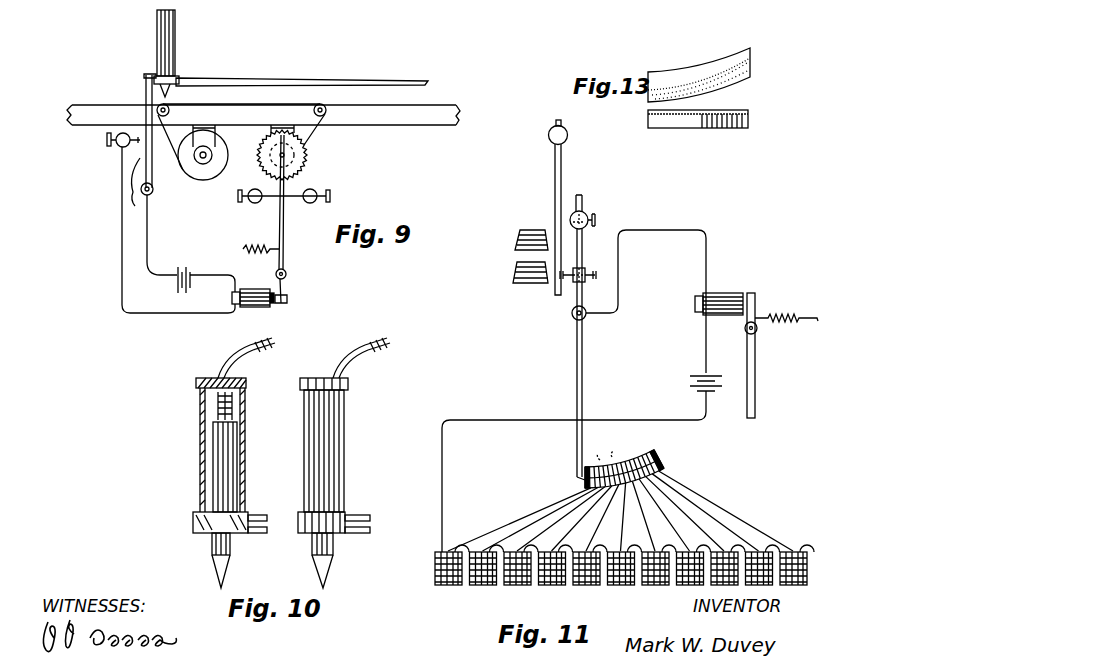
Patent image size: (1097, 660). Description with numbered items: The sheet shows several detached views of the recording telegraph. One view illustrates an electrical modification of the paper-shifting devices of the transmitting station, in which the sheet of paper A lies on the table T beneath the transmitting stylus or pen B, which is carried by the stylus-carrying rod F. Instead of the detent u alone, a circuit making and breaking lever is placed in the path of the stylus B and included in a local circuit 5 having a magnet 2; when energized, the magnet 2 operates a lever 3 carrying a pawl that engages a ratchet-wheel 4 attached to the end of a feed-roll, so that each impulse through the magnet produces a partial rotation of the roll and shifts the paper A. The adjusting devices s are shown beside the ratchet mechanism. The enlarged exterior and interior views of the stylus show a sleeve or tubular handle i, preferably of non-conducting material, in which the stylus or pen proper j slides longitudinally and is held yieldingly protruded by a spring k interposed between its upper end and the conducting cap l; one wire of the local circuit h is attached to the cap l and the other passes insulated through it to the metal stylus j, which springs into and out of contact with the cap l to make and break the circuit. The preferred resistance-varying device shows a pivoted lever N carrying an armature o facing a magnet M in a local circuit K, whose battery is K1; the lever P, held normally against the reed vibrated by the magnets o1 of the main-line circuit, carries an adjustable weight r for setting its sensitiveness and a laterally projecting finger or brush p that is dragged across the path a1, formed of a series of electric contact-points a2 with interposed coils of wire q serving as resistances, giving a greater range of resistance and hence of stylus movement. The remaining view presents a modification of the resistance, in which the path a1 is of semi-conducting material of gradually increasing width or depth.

In FIG. 9, the transmitting stylus or pen B is at (171, 53).
In FIG. 9, the stylus-carrying rod F is at (302, 71).
In FIG. 9, the detent u is at (145, 81).
In FIG. 9, the sheet of paper A is at (241, 127).
In FIG. 9, the table T is at (263, 115).
In FIG. 9, the ratchet-wheel 4 is at (273, 152).
In FIG. 9, the adjusting screws s is at (284, 185).
In FIG. 9, the lever 3 is at (271, 219).
In FIG. 9, the local circuit 5 is at (171, 223).
In FIG. 9, the magnet 2 is at (253, 287).
In FIG. 10, the sleeve or tubular handle i is at (199, 466).
In FIG. 10, the spring k is at (240, 412).
In FIG. 10, the cap l is at (197, 382).
In FIG. 10, the stylus or pen proper j is at (212, 548).
In FIG. 10, the local circuit h is at (356, 380).
In FIG. 11, the armature o is at (553, 209).
In FIG. 11, the weight r is at (586, 212).
In FIG. 11, the magnets o1 is at (523, 256).
In FIG. 11, the lever P is at (576, 385).
In FIG. 11, the battery K1 is at (654, 321).
In FIG. 11, the local circuit K is at (574, 476).
In FIG. 11, the magnet M is at (719, 293).
In FIG. 11, the pivoted lever N is at (786, 353).
In FIG. 11, the path a1 is at (666, 462).
In FIG. 13, the path a1 is at (749, 56).
In FIG. 11, the electric contact-points a2 is at (616, 447).
In FIG. 11, the finger or brush p is at (578, 484).
In FIG. 11, the coils of wire q is at (628, 539).